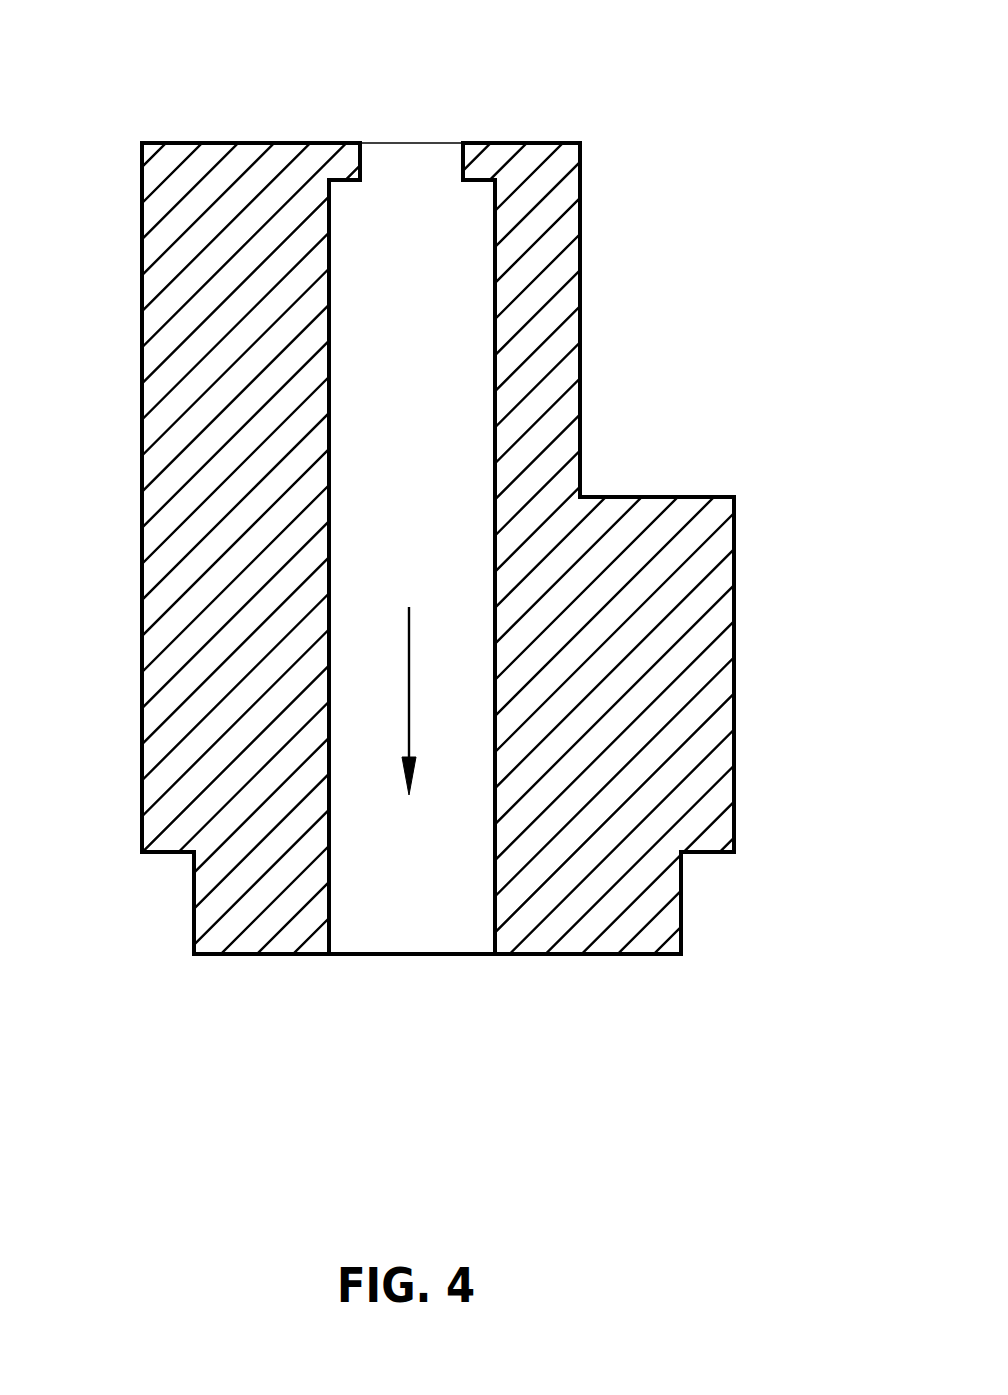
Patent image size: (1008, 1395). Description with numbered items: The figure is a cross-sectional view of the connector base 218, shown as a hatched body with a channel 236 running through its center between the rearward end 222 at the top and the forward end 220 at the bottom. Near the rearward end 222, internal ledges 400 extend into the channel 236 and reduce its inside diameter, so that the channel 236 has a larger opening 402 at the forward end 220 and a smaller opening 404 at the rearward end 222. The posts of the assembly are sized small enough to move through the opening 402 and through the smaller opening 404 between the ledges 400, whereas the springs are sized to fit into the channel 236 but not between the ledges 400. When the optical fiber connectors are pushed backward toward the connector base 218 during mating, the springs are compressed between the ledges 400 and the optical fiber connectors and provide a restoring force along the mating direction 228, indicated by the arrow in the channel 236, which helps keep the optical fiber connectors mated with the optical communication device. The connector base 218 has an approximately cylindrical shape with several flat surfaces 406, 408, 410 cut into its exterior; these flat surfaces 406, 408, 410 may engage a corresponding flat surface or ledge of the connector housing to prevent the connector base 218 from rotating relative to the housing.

The connector base 218 is at (734, 600).
The forward end 220 is at (602, 955).
The rearward end 222 is at (222, 142).
The mating direction 228 is at (410, 640).
The channel 236 is at (450, 433).
The internal ledge 400 is at (345, 183).
The opening 402 is at (495, 977).
The smaller opening 404 is at (463, 142).
The flat surface 406 is at (580, 255).
The flat surface 408 is at (681, 905).
The flat surface 410 is at (194, 913).